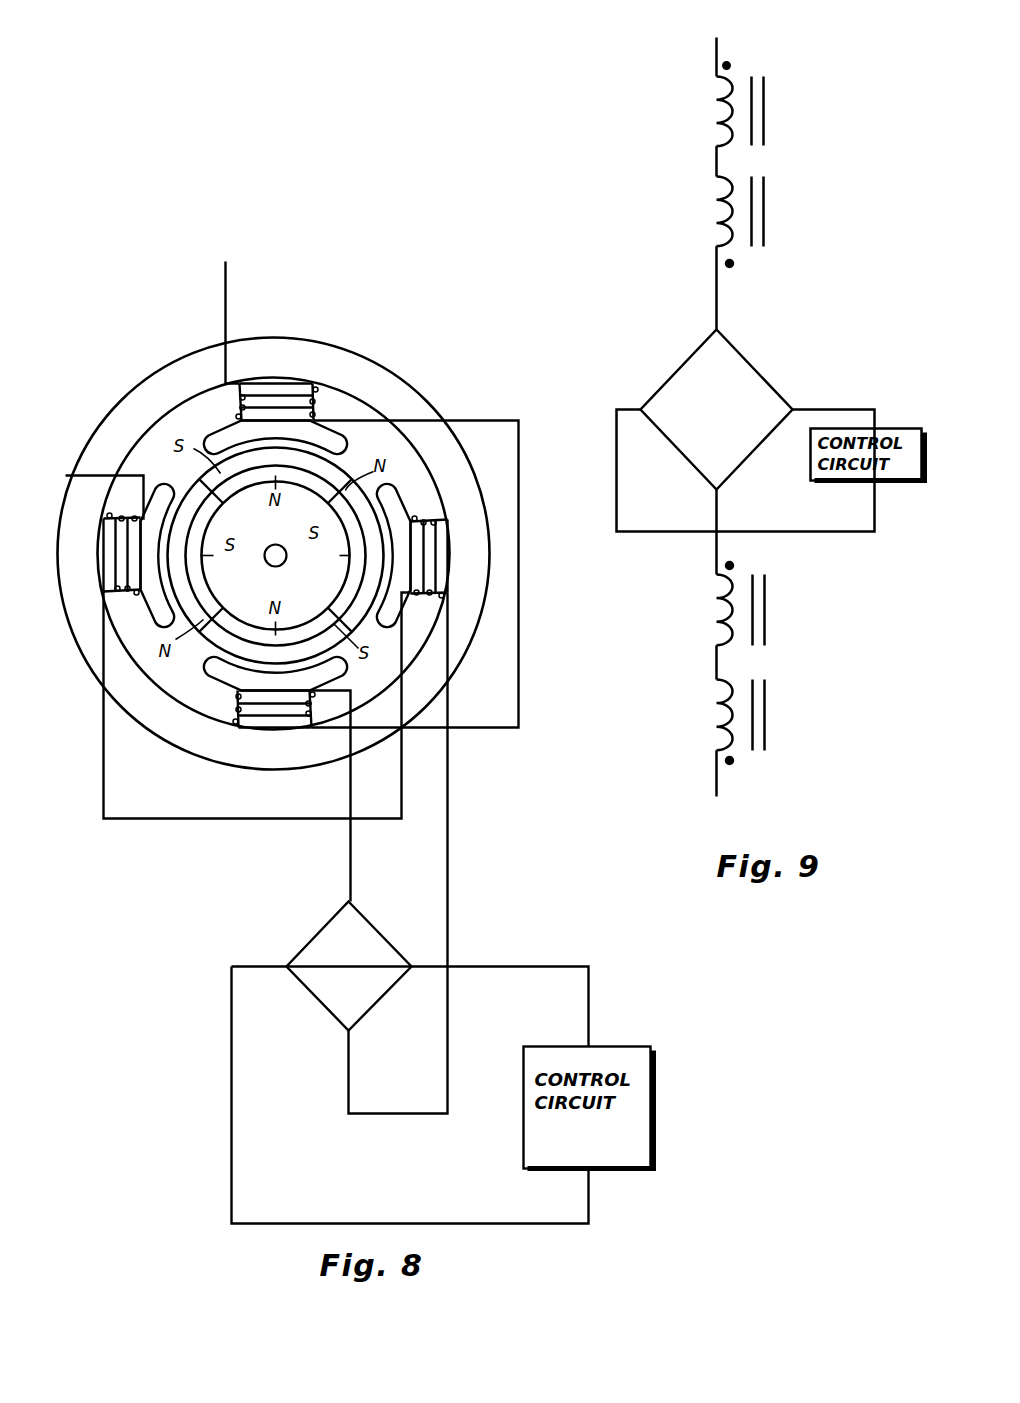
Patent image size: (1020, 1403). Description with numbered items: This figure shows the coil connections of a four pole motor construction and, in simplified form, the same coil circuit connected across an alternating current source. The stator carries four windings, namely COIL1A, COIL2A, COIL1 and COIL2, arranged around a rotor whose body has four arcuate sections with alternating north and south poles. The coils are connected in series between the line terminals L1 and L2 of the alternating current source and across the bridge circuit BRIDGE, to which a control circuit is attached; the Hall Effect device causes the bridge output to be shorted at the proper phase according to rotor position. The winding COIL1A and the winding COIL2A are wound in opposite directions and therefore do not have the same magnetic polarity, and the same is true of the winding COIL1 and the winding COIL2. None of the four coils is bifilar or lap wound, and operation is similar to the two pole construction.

In FIG. 8, the line terminal L1 is at (226, 310).
In FIG. 9, the line terminal L1 is at (718, 44).
In FIG. 8, the line terminal L2 is at (91, 483).
In FIG. 9, the line terminal L2 is at (720, 791).
In FIG. 8, the coil 1 COIL1 is at (92, 550).
In FIG. 9, the coil 1 COIL1 is at (700, 715).
In FIG. 8, the coil 1A COIL1A is at (277, 375).
In FIG. 9, the coil 1A COIL1A is at (697, 111).
In FIG. 8, the coil 2 COIL2 is at (452, 548).
In FIG. 9, the coil 2 COIL2 is at (700, 610).
In FIG. 8, the coil 2A COIL2A is at (275, 735).
In FIG. 9, the coil 2A COIL2A is at (697, 212).
In FIG. 8, the bridge circuit BRIDGE is at (349, 966).